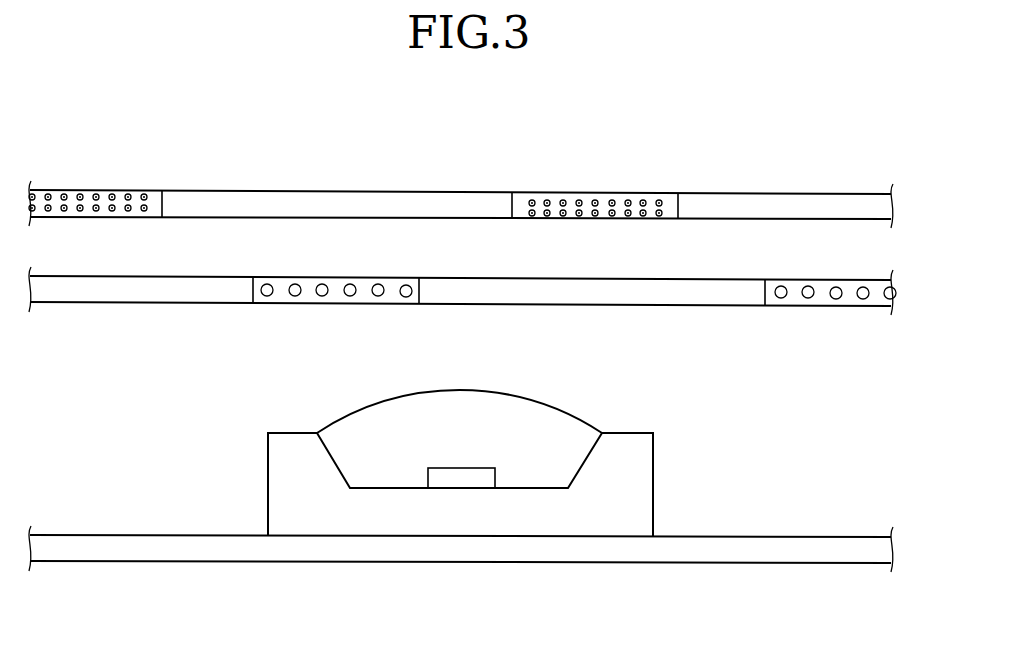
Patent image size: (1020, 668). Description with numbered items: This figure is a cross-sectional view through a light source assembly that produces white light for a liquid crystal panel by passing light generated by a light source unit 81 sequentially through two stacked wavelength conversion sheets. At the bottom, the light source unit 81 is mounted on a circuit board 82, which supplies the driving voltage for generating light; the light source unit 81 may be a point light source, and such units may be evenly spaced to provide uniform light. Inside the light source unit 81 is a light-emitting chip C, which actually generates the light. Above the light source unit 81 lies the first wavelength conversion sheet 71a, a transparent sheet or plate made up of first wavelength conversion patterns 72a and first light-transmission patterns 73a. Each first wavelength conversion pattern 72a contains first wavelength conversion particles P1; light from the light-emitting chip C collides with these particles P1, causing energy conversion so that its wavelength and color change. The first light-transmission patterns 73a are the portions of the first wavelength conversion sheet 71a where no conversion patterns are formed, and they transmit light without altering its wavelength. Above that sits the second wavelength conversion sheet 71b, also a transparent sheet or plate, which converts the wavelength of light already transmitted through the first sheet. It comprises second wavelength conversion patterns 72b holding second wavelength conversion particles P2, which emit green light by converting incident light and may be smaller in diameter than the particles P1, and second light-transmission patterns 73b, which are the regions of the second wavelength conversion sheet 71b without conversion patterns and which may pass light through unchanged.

The first wavelength conversion sheet 71a is at (228, 413).
The first wavelength conversion patterns 72a is at (264, 301).
The first light-transmission patterns 73a is at (170, 292).
The second wavelength conversion sheet 71b is at (742, 130).
The second wavelength conversion patterns 72b is at (670, 201).
The second light-transmission patterns 73b is at (745, 204).
The first wavelength conversion particles P1 is at (409, 284).
The second wavelength conversion particles P2 is at (147, 194).
The light source units 81 is at (396, 511).
The circuit board 82 is at (378, 546).
The light-emitting chip C is at (468, 482).